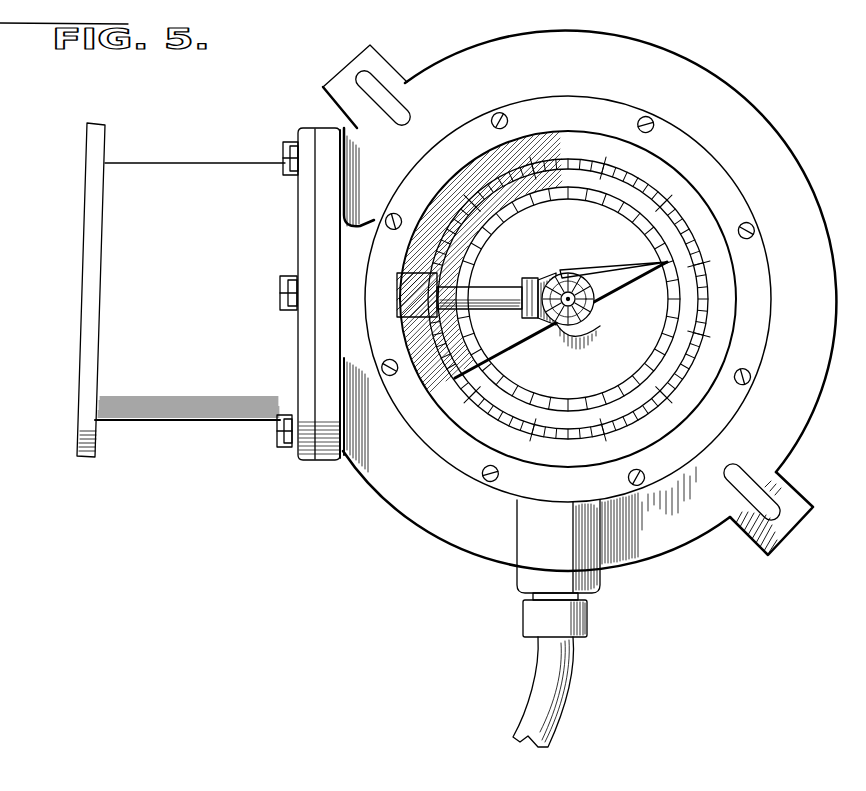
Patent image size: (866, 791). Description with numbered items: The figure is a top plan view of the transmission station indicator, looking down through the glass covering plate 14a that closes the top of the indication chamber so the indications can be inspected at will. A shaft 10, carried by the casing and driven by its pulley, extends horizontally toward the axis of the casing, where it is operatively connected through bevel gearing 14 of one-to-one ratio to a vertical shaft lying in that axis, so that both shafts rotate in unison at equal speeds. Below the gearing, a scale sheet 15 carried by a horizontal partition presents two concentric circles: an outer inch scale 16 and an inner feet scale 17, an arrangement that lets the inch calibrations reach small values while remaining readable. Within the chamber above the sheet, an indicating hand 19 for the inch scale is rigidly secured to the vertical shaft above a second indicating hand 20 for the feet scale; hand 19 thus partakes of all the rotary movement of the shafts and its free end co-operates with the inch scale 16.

The shaft 10 is at (487, 290).
The bevel gearing 14 is at (563, 272).
The glass covering plate 14a is at (565, 120).
The scale sheet 15 is at (572, 391).
The inch scale 16 is at (661, 410).
The feet scale 17 is at (663, 323).
The indicating hand 19 is at (500, 348).
The indicating hand 20 is at (617, 266).